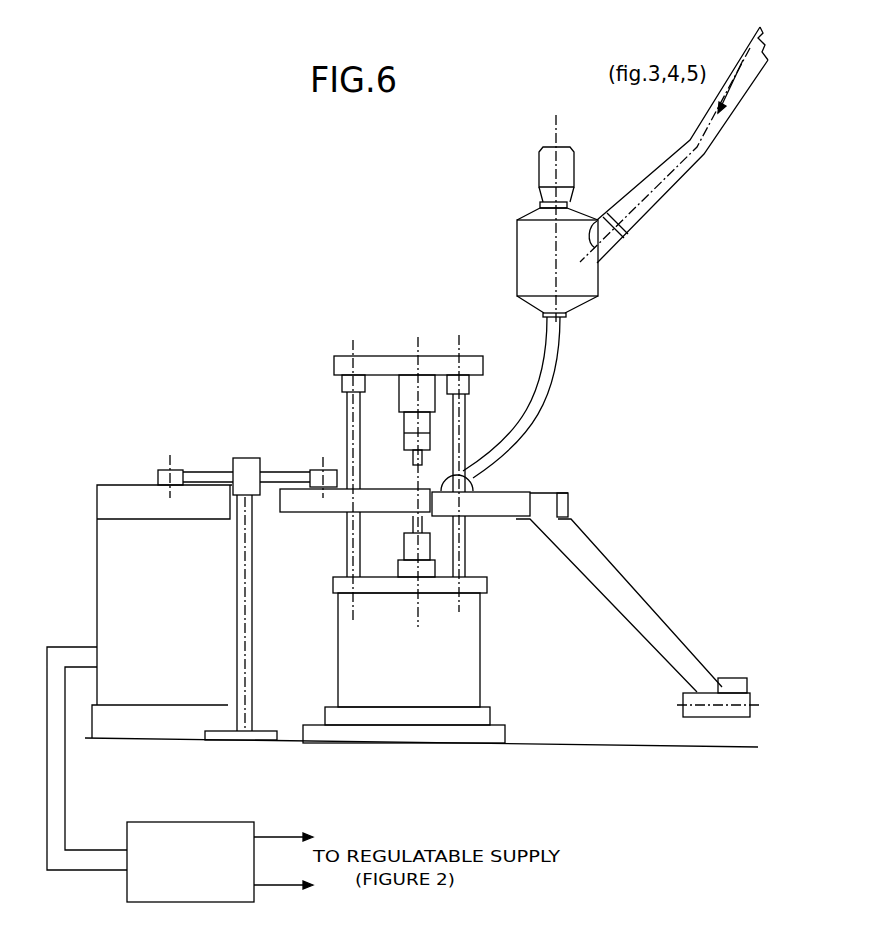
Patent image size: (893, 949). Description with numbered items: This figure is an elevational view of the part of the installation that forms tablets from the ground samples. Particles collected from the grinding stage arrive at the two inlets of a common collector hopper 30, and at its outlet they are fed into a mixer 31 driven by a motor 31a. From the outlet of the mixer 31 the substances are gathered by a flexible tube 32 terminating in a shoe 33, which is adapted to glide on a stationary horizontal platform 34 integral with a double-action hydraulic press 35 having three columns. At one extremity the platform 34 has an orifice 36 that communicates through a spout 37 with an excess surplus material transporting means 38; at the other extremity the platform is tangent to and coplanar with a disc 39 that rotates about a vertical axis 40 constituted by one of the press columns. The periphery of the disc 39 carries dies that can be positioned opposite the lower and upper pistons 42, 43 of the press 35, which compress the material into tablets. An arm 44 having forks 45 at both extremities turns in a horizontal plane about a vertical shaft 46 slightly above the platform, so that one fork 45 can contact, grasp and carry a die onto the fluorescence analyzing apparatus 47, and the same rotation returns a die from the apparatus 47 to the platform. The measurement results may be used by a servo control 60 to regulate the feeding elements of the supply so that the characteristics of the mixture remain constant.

The common collector hopper 30 is at (663, 170).
The mixer 31 is at (532, 260).
The motor 31a is at (547, 168).
The flexible tube 32 is at (554, 372).
The shoe 33 is at (463, 471).
The stationary horizontal platform 34 is at (502, 500).
The double-action hydraulic press 35 is at (470, 648).
The orifice 36 is at (540, 507).
The spout 37 is at (617, 597).
The excess surplus material transporting means 38 is at (683, 703).
The disc 39 is at (297, 507).
The vertical axis 40 is at (350, 530).
The lower piston 42 is at (412, 522).
The upper piston 43 is at (413, 459).
The arm 44 is at (272, 476).
The fork 45 is at (328, 476).
The vertical shaft 46 is at (245, 678).
The fluorescence analyzing apparatus 47 is at (153, 695).
The servo control 60 is at (233, 903).